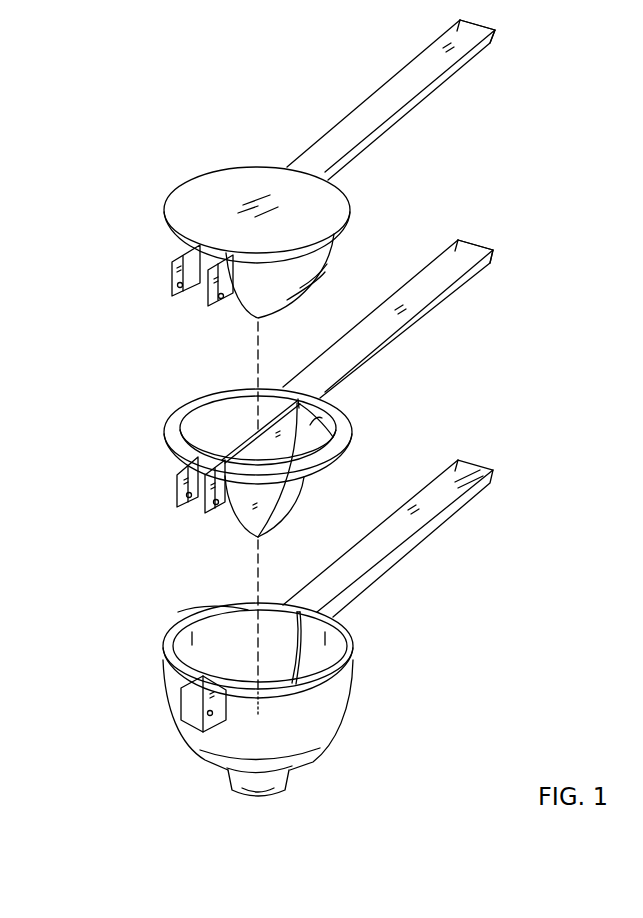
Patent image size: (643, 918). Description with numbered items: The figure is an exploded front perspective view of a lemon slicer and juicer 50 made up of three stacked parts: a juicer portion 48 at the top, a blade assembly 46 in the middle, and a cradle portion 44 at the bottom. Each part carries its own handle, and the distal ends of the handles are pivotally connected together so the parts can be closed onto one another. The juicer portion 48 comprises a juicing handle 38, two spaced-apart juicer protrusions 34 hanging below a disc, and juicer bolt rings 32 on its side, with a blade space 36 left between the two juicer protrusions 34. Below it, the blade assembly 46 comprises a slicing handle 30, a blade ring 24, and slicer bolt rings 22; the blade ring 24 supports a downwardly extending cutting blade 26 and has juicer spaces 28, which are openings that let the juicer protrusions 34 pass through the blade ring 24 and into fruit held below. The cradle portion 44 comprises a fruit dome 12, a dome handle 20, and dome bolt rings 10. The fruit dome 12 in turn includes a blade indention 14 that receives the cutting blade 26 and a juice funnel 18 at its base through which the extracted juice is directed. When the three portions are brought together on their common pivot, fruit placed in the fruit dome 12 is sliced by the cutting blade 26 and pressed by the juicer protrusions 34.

The lemon slicer and juicer 50 is at (126, 76).
The dome bolt rings 10 is at (183, 723).
The fruit dome 12 is at (230, 630).
The blade indention 14 is at (352, 655).
The juice funnel 18 is at (275, 798).
The dome handle 20 is at (463, 477).
The slicer bolt rings 22 is at (193, 507).
The blade ring 24 is at (168, 422).
The cutting blade 26 is at (282, 497).
The juicer spaces 28 is at (217, 422).
The slicing handle 30 is at (357, 347).
The juicer bolt rings 32 is at (200, 307).
The juicer protrusions 34 is at (330, 280).
The blade space 36 is at (232, 307).
The juicing handle 38 is at (372, 112).
The cradle portion 44 is at (347, 723).
The blade assembly 46 is at (462, 285).
The juicer portion 48 is at (437, 90).